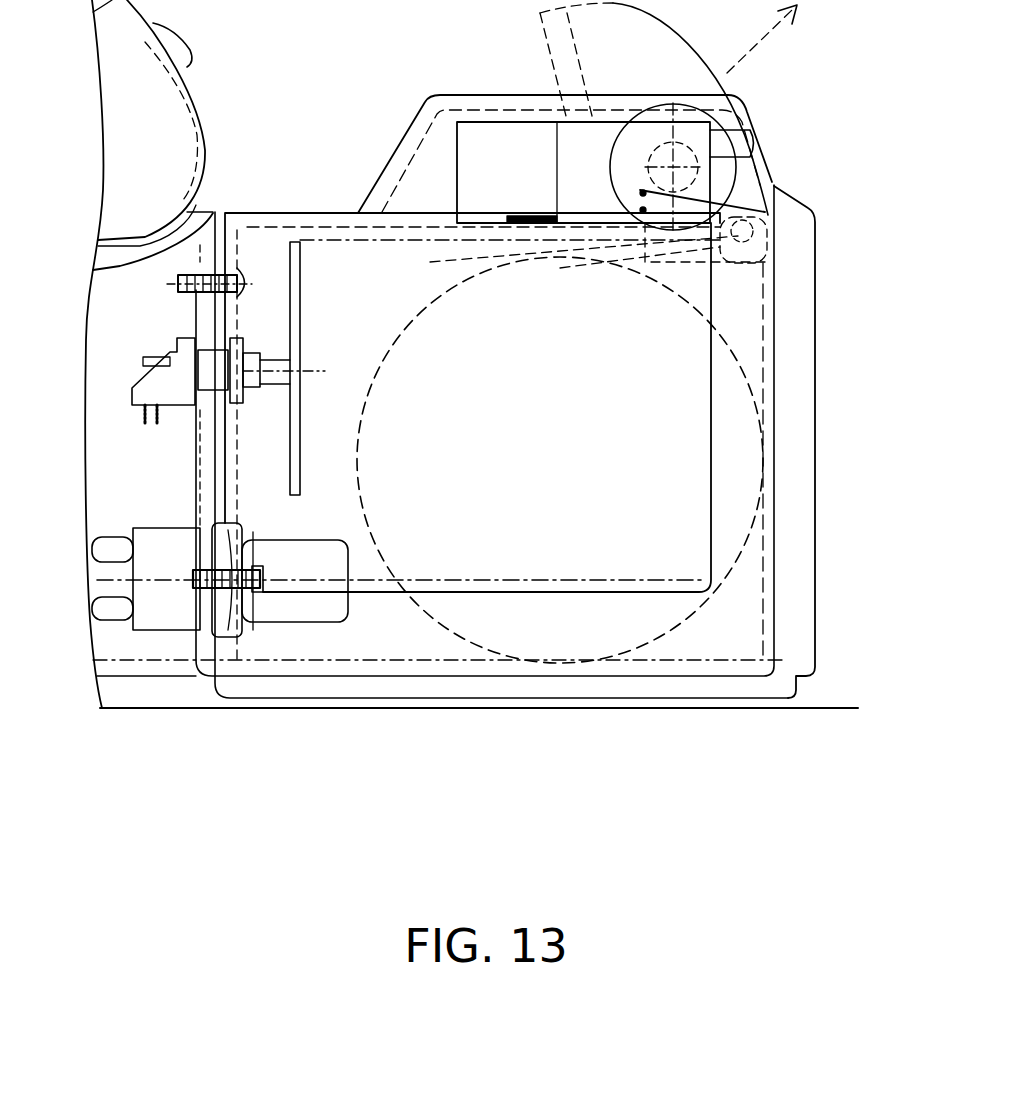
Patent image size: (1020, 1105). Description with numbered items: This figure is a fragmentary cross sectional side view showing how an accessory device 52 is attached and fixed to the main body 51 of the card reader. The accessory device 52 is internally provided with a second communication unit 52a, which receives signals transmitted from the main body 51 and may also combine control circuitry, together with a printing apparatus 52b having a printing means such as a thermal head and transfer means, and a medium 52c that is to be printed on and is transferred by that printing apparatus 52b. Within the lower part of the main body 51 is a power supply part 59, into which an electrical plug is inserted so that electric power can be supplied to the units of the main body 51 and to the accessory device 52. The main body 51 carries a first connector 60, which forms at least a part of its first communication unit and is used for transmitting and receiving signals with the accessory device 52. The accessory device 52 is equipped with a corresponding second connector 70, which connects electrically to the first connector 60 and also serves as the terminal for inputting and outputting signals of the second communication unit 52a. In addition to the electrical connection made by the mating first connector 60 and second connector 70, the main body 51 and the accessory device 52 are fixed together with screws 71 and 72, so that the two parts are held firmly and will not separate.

The main body 51 is at (160, 670).
The accessory device 52 is at (503, 690).
The second communication unit 52a is at (297, 247).
The printing apparatus 52b is at (533, 133).
The medium 52c is at (667, 640).
The power supply part 59 is at (185, 620).
The first connector 60 is at (183, 395).
The second connector 70 is at (248, 385).
The screw 71 is at (238, 593).
The screw 72 is at (195, 276).